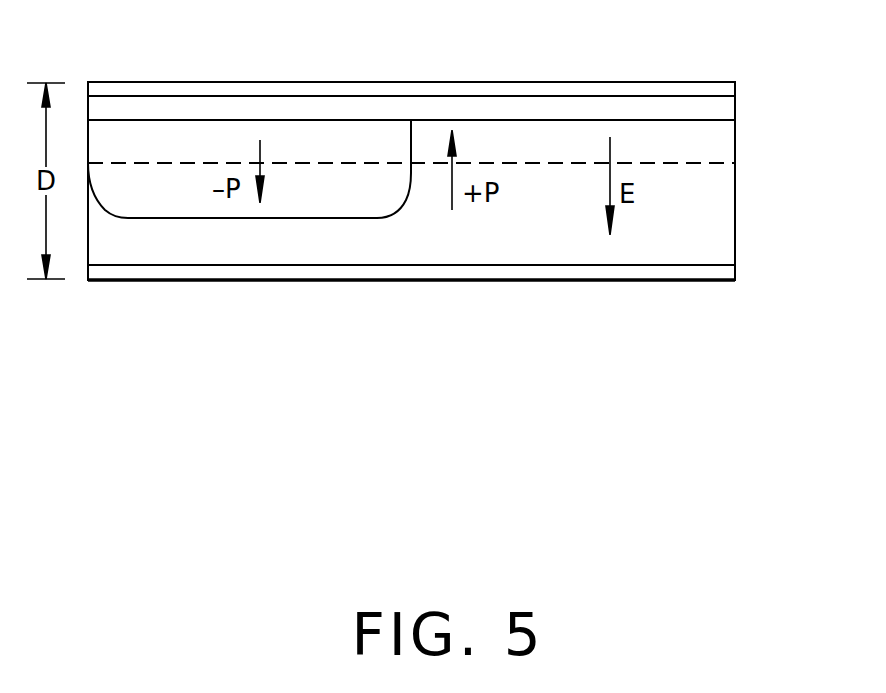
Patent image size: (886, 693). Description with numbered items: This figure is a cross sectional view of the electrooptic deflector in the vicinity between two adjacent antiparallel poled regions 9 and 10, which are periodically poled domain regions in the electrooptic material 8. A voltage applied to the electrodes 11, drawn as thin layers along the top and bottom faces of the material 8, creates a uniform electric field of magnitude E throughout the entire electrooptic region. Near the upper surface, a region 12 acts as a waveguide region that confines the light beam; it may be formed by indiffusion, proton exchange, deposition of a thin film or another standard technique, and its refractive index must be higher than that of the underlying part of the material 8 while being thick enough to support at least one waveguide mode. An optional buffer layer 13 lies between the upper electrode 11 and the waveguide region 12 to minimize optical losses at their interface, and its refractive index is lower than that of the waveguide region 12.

The electrooptic material 8 is at (730, 188).
The antiparallel poled region 9 is at (397, 207).
The antiparallel poled region 10 is at (515, 163).
The electrodes 11 is at (633, 87).
The waveguide region 12 is at (728, 110).
The buffer layer 13 is at (728, 89).